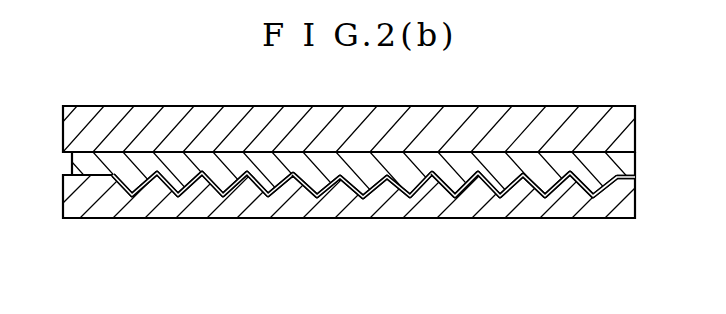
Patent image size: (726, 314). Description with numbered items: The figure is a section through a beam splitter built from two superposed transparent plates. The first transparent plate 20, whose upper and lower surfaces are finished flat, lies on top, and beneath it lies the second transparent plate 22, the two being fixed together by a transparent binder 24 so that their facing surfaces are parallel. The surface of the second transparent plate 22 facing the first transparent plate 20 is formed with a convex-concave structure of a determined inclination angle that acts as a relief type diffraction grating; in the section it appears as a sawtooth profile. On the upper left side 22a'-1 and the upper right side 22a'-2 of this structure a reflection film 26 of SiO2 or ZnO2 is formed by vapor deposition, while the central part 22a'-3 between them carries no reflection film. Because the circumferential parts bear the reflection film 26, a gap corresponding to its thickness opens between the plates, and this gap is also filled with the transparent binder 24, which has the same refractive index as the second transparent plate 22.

The first transparent plate 20 is at (533, 115).
The transparent binder 24 is at (630, 162).
The second transparent plate 22 is at (605, 208).
The reflection film 26 is at (158, 180).
The upper left side of the convex-concave structure 22a'-1 is at (203, 224).
The central part of the convex-concave structure 22a'-3 is at (357, 224).
The upper right side of the convex-concave structure 22a'-2 is at (533, 225).